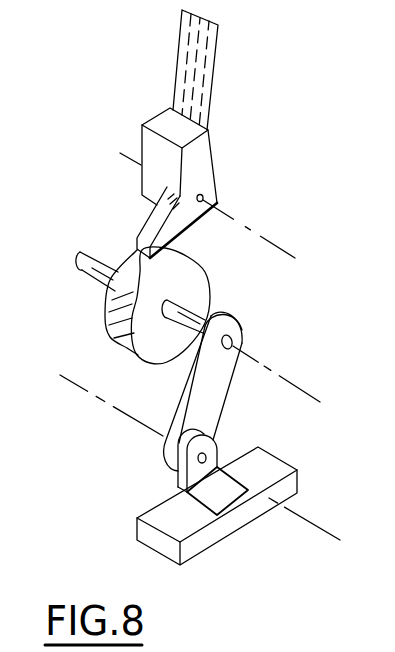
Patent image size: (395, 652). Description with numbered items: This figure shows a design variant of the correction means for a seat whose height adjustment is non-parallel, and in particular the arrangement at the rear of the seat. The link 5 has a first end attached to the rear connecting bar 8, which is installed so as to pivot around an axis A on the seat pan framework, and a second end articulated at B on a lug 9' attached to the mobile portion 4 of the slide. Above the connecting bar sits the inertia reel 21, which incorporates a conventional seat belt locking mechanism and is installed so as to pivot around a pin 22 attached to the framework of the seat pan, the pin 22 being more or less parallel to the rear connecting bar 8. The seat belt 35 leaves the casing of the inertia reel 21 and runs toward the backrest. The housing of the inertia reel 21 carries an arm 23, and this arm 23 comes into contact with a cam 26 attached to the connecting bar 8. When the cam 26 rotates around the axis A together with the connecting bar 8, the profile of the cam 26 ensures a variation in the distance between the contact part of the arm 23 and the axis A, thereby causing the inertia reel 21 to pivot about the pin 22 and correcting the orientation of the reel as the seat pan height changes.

The seat belt 35 is at (182, 74).
The inertia reel 21 is at (203, 160).
The pin 22 is at (276, 241).
The arm 23 is at (183, 223).
The rear connecting bar 8 is at (84, 275).
The cam 26 is at (157, 340).
The link 5 is at (241, 333).
The axis A is at (295, 384).
The lug 9' is at (222, 460).
The articulation point B is at (330, 534).
The mobile portion of the slide 4 is at (155, 542).